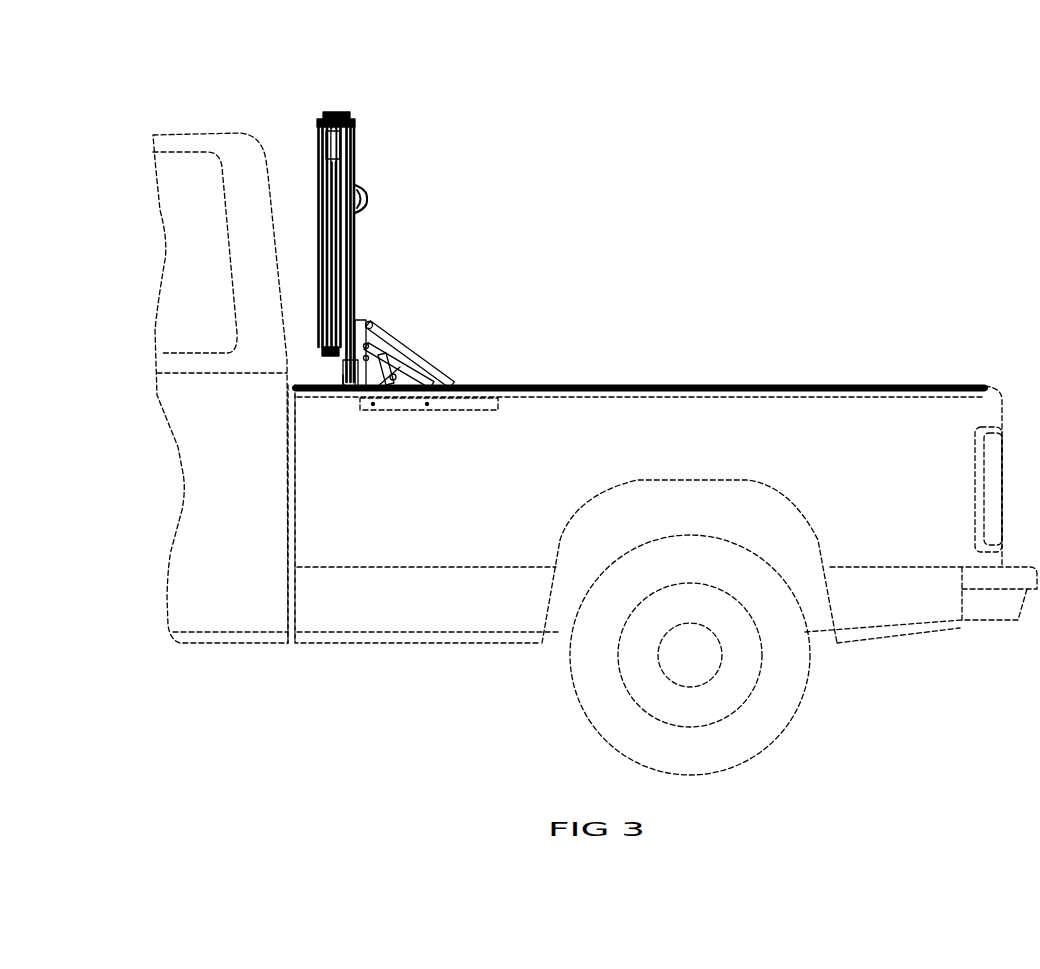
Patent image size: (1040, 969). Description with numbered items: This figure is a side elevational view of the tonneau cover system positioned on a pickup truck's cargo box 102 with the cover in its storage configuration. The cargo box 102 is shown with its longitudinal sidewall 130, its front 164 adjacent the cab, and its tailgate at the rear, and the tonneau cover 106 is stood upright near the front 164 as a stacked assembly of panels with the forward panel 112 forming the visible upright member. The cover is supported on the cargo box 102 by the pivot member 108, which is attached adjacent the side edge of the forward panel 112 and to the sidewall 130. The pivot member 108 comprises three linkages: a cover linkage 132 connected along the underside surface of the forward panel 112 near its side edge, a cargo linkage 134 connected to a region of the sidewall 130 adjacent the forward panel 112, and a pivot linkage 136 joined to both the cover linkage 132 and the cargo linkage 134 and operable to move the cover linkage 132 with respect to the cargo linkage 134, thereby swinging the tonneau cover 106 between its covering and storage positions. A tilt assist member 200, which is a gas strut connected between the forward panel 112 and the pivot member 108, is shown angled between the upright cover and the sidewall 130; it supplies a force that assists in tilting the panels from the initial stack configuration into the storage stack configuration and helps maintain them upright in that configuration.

The cargo box 102 is at (890, 447).
The tonneau cover 106 is at (397, 240).
The pivot member 108 is at (412, 418).
The forward panel 112 is at (355, 162).
The sidewall 130 is at (565, 418).
The cover linkage 132 is at (357, 322).
The cargo linkage 134 is at (472, 404).
The pivot linkage 136 is at (389, 385).
The front 164 is at (295, 517).
The tilt assist member 200 is at (418, 366).